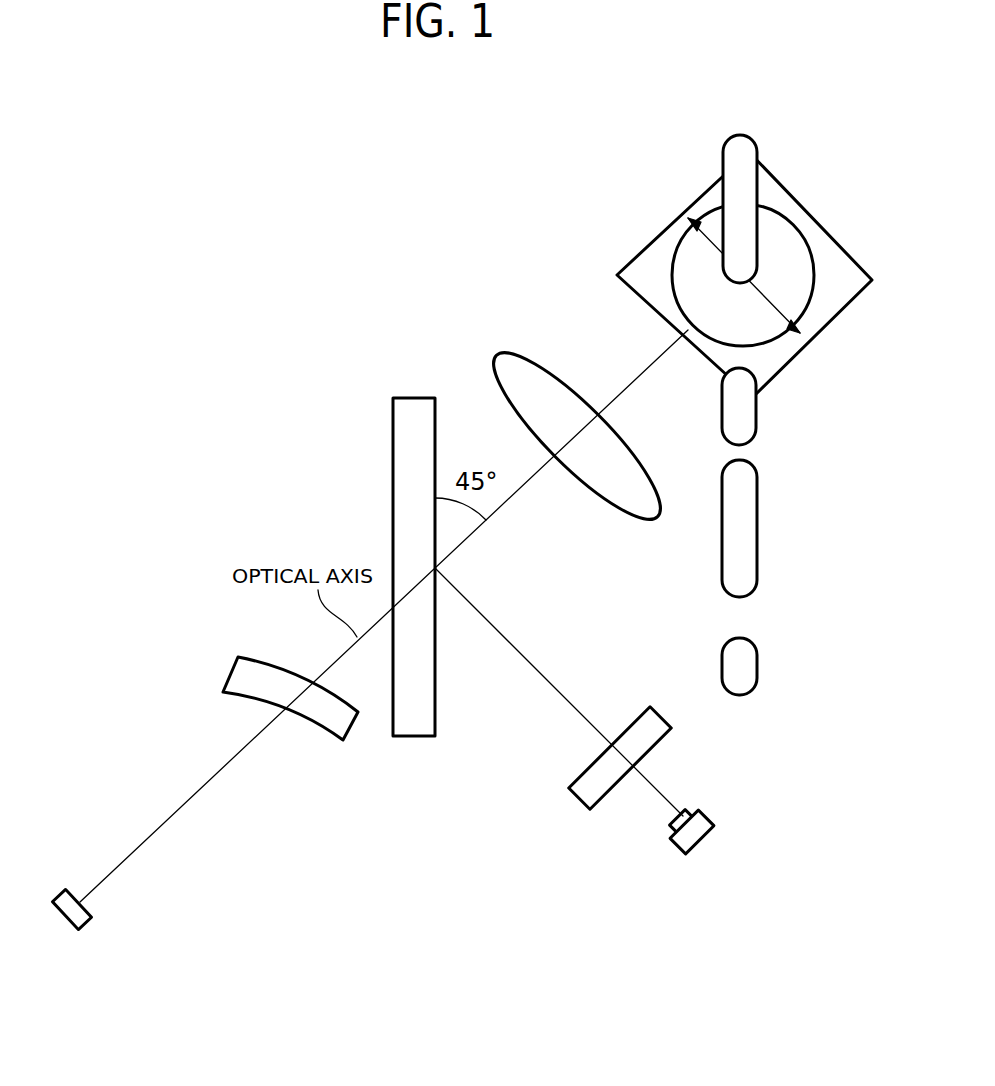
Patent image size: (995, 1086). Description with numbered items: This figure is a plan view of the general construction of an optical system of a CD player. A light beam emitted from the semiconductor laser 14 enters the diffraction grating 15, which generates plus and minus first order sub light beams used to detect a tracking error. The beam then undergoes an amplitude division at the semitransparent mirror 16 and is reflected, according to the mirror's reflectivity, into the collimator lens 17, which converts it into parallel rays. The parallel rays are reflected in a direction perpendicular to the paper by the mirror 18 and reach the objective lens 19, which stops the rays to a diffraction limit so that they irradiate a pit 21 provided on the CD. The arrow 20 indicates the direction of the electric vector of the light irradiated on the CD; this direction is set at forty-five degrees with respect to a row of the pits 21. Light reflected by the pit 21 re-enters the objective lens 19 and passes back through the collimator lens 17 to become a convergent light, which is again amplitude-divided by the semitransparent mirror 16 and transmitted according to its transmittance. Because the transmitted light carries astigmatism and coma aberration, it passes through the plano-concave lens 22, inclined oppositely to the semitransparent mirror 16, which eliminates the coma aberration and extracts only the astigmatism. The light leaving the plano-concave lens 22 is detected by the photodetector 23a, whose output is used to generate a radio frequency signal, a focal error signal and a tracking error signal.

The semiconductor laser 14 is at (693, 835).
The diffraction grating 15 is at (590, 785).
The semitransparent mirror 16 is at (418, 703).
The collimator lens 17 is at (588, 467).
The mirror 18 is at (833, 305).
The objective lens 19 is at (783, 242).
The arrow 20 is at (767, 310).
The pit 21 is at (745, 540).
The plano-concave lens 22 is at (315, 718).
The photodetector 23a is at (80, 913).